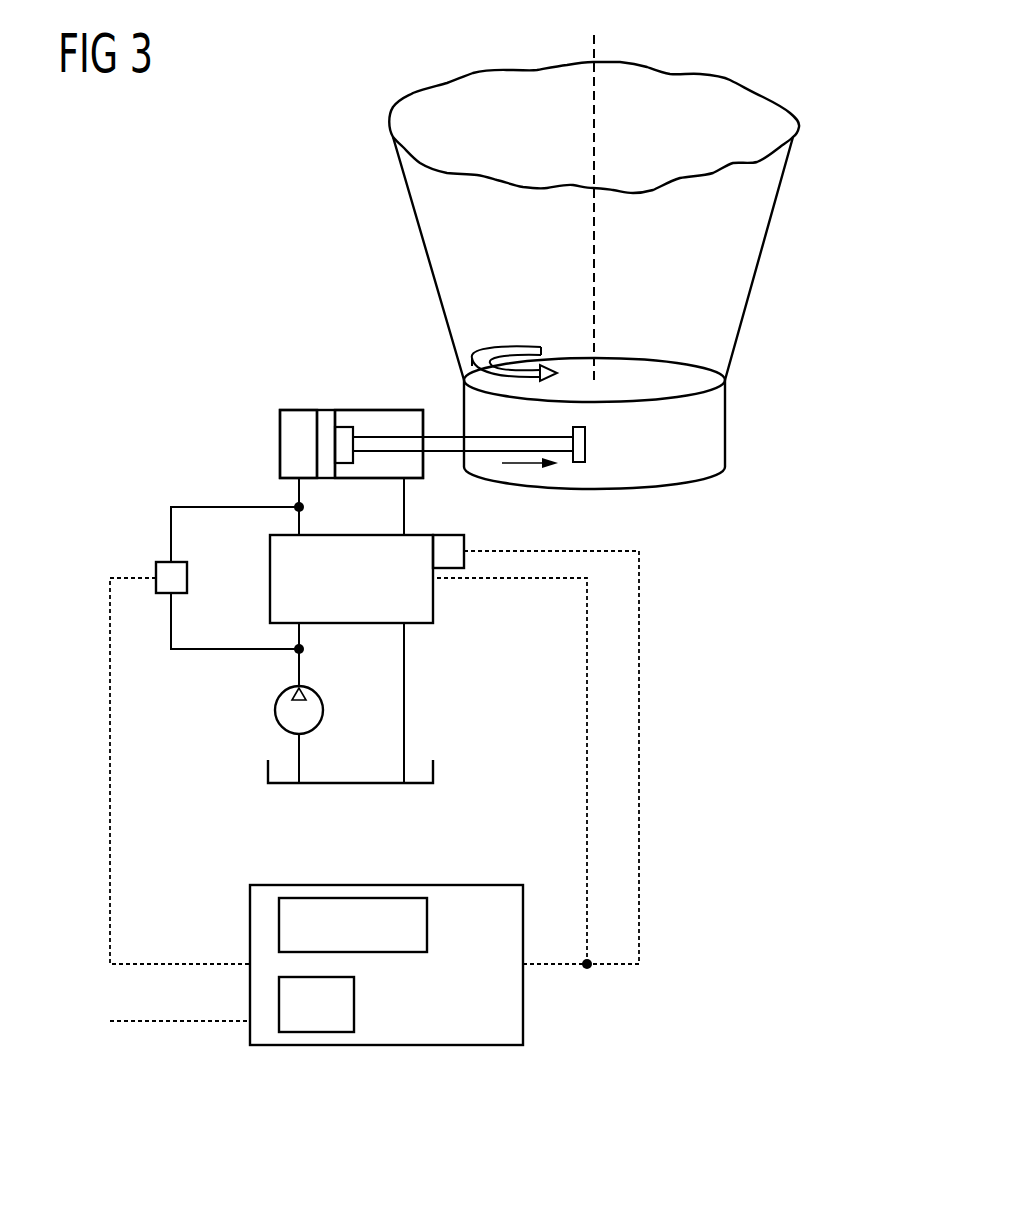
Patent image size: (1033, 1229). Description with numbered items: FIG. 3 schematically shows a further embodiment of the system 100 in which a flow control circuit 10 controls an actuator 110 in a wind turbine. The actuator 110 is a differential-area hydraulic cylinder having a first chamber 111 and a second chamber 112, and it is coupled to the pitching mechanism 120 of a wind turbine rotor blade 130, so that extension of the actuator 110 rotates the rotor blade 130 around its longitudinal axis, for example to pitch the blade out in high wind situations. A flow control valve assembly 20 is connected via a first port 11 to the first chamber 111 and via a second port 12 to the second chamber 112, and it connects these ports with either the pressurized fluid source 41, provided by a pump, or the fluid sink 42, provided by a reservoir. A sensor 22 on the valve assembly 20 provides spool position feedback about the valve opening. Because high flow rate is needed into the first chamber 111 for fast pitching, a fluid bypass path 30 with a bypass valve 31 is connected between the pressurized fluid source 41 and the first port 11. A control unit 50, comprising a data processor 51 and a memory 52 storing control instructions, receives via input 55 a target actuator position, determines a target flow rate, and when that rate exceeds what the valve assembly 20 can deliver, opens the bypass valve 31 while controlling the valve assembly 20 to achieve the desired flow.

The flow control circuit 10 is at (127, 540).
The first port 11 is at (300, 516).
The second port 12 is at (405, 510).
The flow control valve assembly 20 is at (428, 600).
The sensor 22 is at (456, 541).
The fluid bypass path 30 is at (228, 505).
The bypass valve 31 is at (190, 577).
The pressurized fluid source 41 is at (324, 710).
The fluid sink 42 is at (436, 773).
The control unit 50 is at (386, 884).
The data processor 51 is at (428, 925).
The memory 52 is at (356, 1004).
The input 55 is at (180, 1024).
The system 100 is at (752, 765).
The actuator 110 is at (350, 409).
The first chamber 111 is at (299, 419).
The second chamber 112 is at (396, 420).
The pitching mechanism 120 is at (727, 420).
The wind turbine rotor blade 130 is at (765, 252).